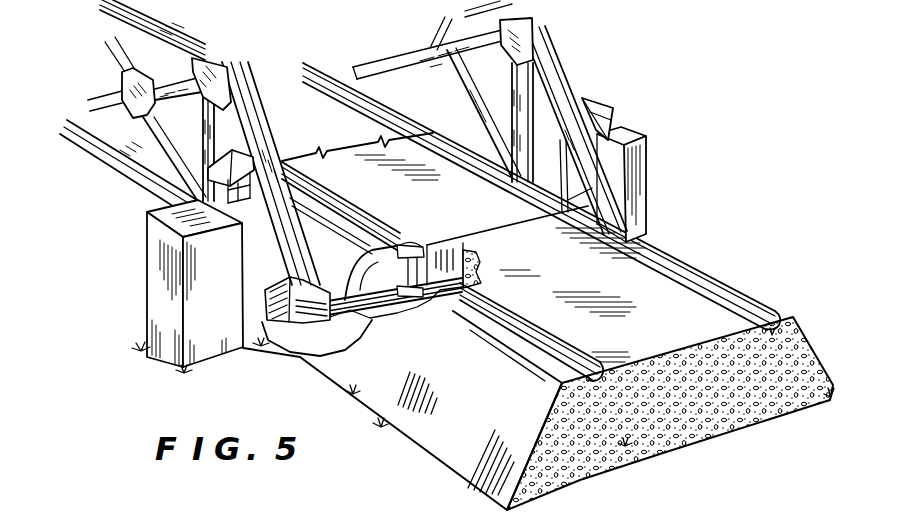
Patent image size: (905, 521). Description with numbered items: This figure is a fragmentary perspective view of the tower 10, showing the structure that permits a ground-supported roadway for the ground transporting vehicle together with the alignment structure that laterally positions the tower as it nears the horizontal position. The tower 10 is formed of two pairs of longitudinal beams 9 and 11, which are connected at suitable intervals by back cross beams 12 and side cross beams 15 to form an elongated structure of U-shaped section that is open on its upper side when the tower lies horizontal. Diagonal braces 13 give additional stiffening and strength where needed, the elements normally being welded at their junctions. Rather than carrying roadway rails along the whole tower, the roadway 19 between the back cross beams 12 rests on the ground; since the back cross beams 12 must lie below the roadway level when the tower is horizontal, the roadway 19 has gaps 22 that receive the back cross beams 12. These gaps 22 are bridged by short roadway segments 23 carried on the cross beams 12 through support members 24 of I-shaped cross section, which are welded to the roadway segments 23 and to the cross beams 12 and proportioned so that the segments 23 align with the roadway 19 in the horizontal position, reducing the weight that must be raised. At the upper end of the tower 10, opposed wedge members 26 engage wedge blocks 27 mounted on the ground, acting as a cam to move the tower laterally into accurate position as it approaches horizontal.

The longitudinal beams 9 is at (190, 42).
The tower 10 is at (572, 62).
The longitudinal beams 11 is at (125, 176).
The back cross beams 12 is at (350, 327).
The diagonal braces 13 is at (172, 88).
The side cross beams 15 is at (205, 140).
The roadway 19 is at (563, 352).
The gaps 22 is at (471, 233).
The roadway segments 23 is at (417, 245).
The support members 24 is at (430, 289).
The wedge members 26 is at (236, 163).
The wedge blocks 27 is at (150, 256).